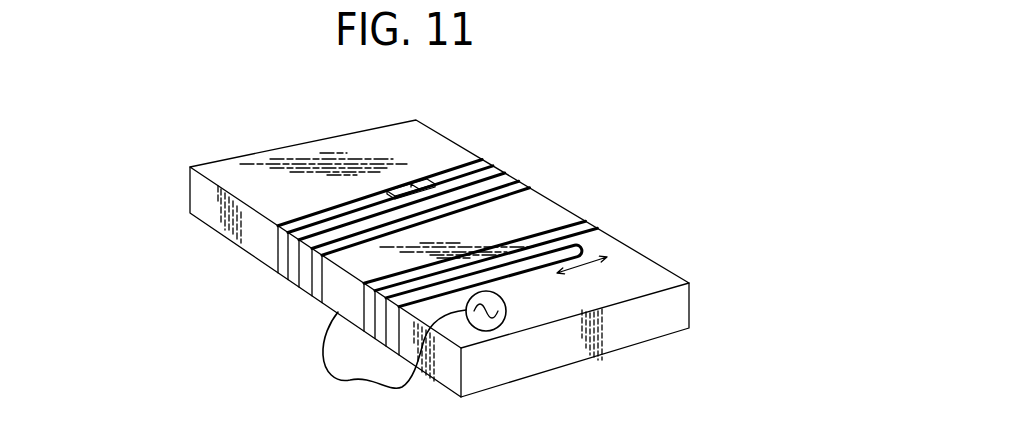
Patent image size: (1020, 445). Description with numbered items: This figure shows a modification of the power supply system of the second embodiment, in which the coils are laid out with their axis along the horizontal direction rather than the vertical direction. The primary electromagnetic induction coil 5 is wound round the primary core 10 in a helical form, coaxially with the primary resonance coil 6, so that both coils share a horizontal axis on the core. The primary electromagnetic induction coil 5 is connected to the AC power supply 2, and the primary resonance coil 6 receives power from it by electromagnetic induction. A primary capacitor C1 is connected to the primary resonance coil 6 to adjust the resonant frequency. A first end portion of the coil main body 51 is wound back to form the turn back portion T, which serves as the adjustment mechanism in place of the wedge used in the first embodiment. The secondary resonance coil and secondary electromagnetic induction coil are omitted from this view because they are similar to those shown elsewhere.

The primary electromagnetic induction coil 5 is at (652, 138).
The primary core 10 is at (258, 238).
The primary resonance coil 6 is at (518, 181).
The coil main body 51 is at (577, 217).
The turn back portion T is at (560, 247).
The primary capacitor C1 is at (413, 178).
The AC power supply 2 is at (507, 308).